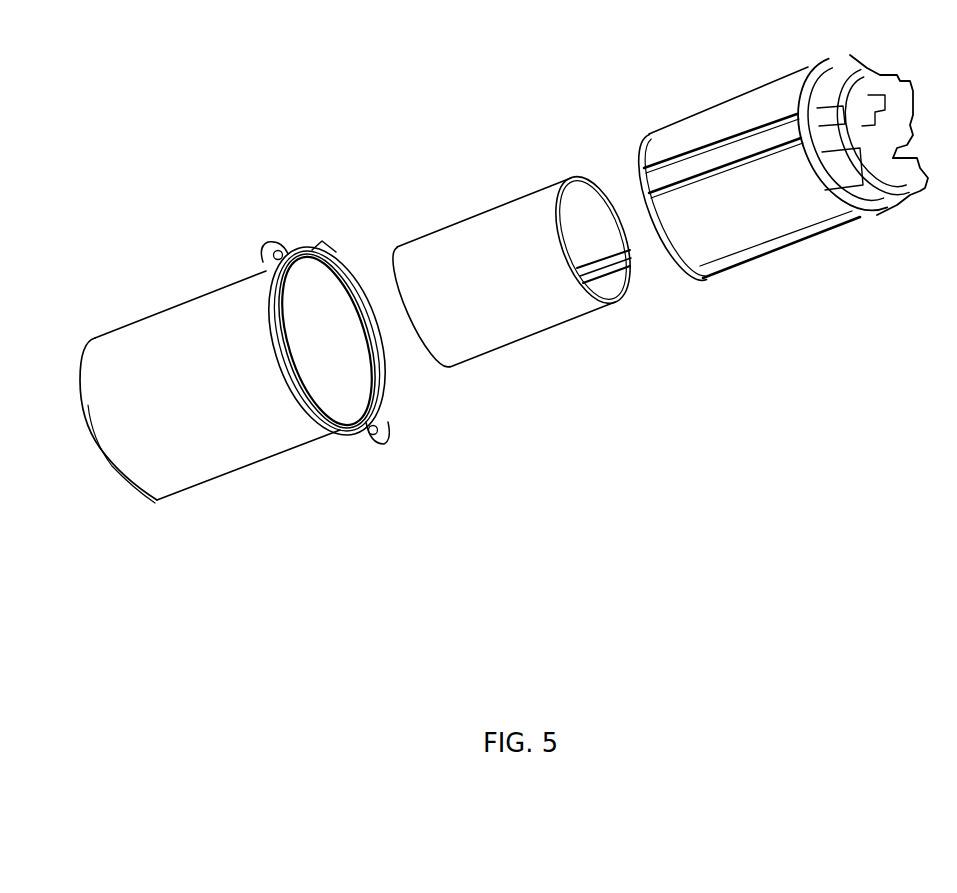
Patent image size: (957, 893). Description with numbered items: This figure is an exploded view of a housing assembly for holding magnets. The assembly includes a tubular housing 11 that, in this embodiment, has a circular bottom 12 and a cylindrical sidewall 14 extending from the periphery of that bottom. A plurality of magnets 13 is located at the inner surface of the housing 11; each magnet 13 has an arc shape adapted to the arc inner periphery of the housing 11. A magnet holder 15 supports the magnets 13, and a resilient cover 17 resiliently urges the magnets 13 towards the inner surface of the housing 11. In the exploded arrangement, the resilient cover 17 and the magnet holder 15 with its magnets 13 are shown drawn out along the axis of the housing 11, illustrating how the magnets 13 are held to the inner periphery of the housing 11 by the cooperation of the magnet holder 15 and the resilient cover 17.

The housing 11 is at (208, 312).
The circular bottom 12 is at (97, 447).
The magnets 13 is at (732, 113).
The cylindrical sidewall 14 is at (250, 453).
The magnet holder 15 is at (898, 198).
The resilient cover 17 is at (502, 213).